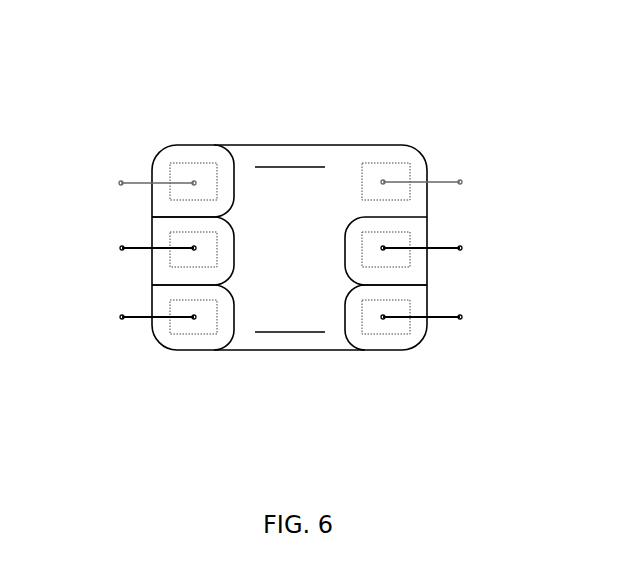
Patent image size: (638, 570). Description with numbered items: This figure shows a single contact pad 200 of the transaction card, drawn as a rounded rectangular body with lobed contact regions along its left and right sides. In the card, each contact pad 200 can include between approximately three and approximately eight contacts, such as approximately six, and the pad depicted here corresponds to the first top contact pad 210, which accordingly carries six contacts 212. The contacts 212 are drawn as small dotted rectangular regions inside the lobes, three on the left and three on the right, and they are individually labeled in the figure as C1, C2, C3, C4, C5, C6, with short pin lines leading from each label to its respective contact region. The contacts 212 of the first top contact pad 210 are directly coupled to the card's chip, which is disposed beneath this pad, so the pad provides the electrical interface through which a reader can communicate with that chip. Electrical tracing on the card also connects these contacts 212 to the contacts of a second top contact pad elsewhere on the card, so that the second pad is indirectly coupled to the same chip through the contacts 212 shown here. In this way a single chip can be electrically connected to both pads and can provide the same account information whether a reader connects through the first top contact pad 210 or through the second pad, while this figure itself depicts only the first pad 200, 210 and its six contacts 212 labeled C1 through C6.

The contact pad 200 is at (267, 145).
The first top contact pad 210 is at (245, 338).
The contacts 212 is at (170, 261).
The terminal C1 is at (122, 182).
The terminal C2 is at (122, 248).
The terminal C3 is at (122, 317).
The terminal C4 is at (463, 183).
The terminal C5 is at (461, 248).
The terminal C6 is at (462, 318).